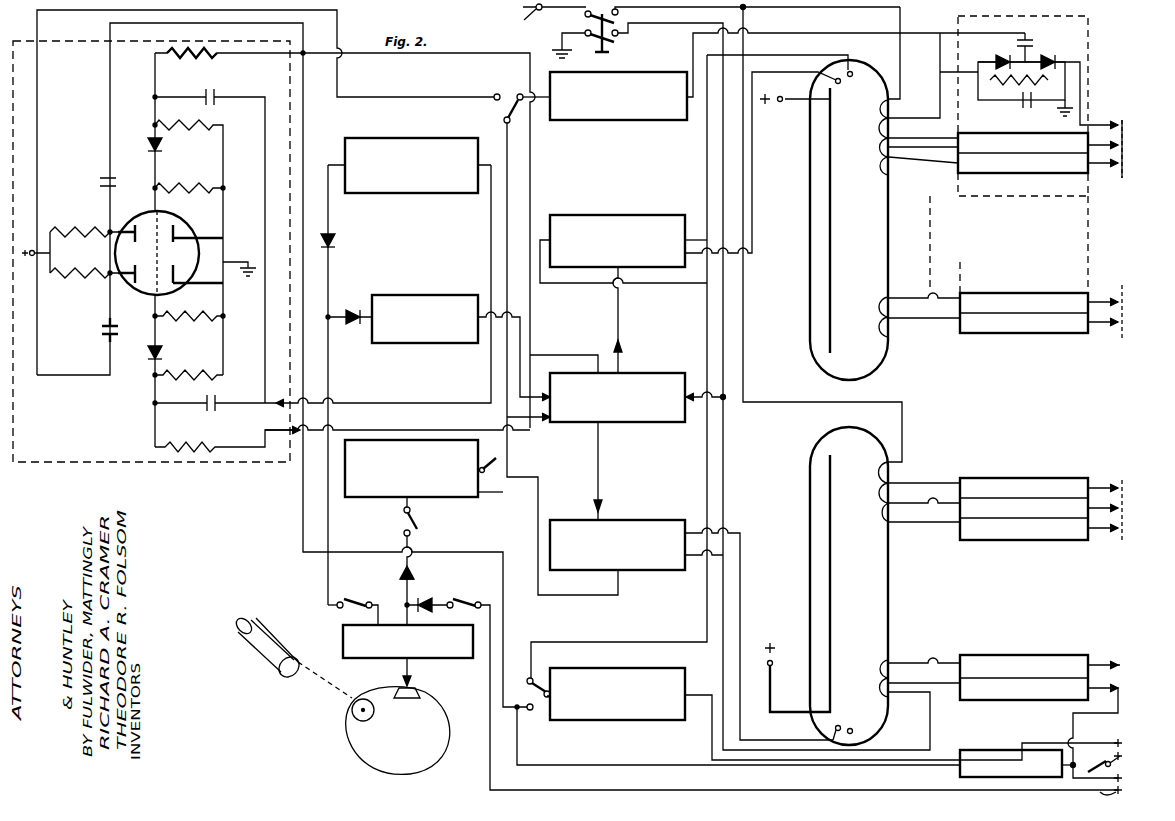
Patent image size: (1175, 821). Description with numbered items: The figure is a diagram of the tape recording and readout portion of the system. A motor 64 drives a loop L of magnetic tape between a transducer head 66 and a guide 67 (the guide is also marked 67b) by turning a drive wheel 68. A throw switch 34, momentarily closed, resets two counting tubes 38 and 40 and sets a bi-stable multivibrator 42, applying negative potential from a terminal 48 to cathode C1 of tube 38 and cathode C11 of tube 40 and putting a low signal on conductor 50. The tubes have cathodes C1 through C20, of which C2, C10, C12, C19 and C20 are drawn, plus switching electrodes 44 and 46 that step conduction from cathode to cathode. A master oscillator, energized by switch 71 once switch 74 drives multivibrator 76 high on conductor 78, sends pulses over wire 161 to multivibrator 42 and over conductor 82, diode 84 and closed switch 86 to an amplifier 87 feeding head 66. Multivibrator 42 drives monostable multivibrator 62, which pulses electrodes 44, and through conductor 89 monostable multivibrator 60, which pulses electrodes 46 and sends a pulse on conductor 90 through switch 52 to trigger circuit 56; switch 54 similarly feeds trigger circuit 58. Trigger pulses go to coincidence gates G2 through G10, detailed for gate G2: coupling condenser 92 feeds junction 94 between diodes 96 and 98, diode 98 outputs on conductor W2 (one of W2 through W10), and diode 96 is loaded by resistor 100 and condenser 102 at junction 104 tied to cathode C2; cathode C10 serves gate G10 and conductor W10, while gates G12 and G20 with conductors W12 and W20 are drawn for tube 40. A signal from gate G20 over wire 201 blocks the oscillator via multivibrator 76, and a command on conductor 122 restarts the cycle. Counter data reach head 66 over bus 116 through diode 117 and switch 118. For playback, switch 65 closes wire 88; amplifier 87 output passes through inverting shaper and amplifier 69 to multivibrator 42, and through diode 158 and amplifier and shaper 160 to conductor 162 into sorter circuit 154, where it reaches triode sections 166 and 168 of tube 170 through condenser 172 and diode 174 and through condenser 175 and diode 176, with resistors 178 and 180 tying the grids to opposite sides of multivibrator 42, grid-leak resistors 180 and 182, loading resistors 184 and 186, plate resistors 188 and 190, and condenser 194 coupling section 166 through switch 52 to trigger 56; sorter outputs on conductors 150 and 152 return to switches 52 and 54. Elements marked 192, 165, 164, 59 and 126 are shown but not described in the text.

The sorter circuit 154 is at (108, 465).
The resistor 178 is at (172, 51).
The condenser 175 is at (206, 88).
The diode loading resistor 186 is at (206, 120).
The diode 176 is at (162, 145).
The resistor 180 is at (195, 175).
The capacitor 192 is at (108, 178).
The triode section 168 is at (129, 190).
The tube 170 is at (190, 236).
The resistor 190 is at (74, 228).
The resistor 188 is at (84, 278).
The triode section 166 is at (148, 295).
The condenser 194 is at (102, 336).
The grid-leak resistor 182 is at (189, 306).
The diode 174 is at (160, 352).
The diode loading resistor 184 is at (206, 364).
The condenser 172 is at (216, 403).
The conductor 162 is at (348, 404).
The line 165 is at (420, 428).
The line 164 is at (544, 344).
The wire 161 is at (536, 433).
The wire 88 is at (328, 478).
The conductor 152 is at (303, 540).
The diode 158 is at (341, 242).
The conductor 150 is at (412, 97).
The amplifier and shaper circuit 160 is at (382, 138).
The switch 52 is at (494, 103).
The inverting shaper and amplifier 69 is at (432, 294).
The guide 67 is at (346, 306).
The conductor 90 is at (482, 460).
The switch 71 is at (508, 468).
The conductor 82 is at (411, 514).
The two-state switch 86 is at (418, 532).
The diode 84 is at (402, 572).
The switch 65 is at (366, 598).
The diode 117 is at (424, 602).
The switch 118 is at (464, 600).
The amplifier circuit 87 is at (343, 634).
The transducer head 66 is at (418, 684).
The guide 67b is at (422, 700).
The drive wheel 68 is at (372, 718).
The tape loop L is at (358, 756).
The motor 64 is at (252, 622).
The terminal 48 is at (522, 18).
The throw switch 34 is at (574, 28).
The trigger circuit 56 is at (626, 122).
The monostable multivibrator 62 is at (626, 215).
The conductor 50 is at (626, 348).
The bi-stable multivibrator 42 is at (680, 373).
The conductor 89 is at (620, 459).
The monostable multivibrator 60 is at (644, 514).
The switch 54 is at (544, 672).
The trigger circuit 58 is at (642, 670).
The line 59 is at (712, 680).
The conductor 78 is at (894, 764).
The counting tube 38 is at (808, 274).
The switching electrodes 44 is at (856, 70).
The cathode C1 is at (878, 100).
The cathode C2 is at (933, 98).
The coupling condenser 92 is at (1028, 40).
The diode 96 is at (1009, 66).
The junction point 94 is at (1038, 56).
The diode 98 is at (1065, 70).
The junction point 104 is at (970, 68).
The resistor 100 is at (1020, 82).
The condenser 102 is at (1032, 108).
The gate circuit G2 is at (1090, 52).
The conductor W2 is at (1100, 122).
The cathode C10 is at (914, 334).
The gate circuit G10 is at (1086, 346).
The conductor W10 is at (1120, 308).
The counting tube 40 is at (808, 542).
The switching electrodes 46 is at (848, 724).
The cathode C11 is at (900, 438).
The cathode C12 is at (907, 484).
The gate group G12 is at (1068, 476).
The output W12 is at (1119, 486).
The cathode C19 is at (912, 652).
The cathode C20 is at (913, 694).
The gate circuit G20 is at (1106, 658).
The output W20 is at (1112, 688).
The wire 201 is at (1073, 720).
The bi-stable multivibrator 76 is at (960, 780).
The switch 74 is at (1120, 758).
The terminal 126 is at (1120, 744).
The conductor 122 is at (1120, 782).
The bus 116 is at (1120, 794).